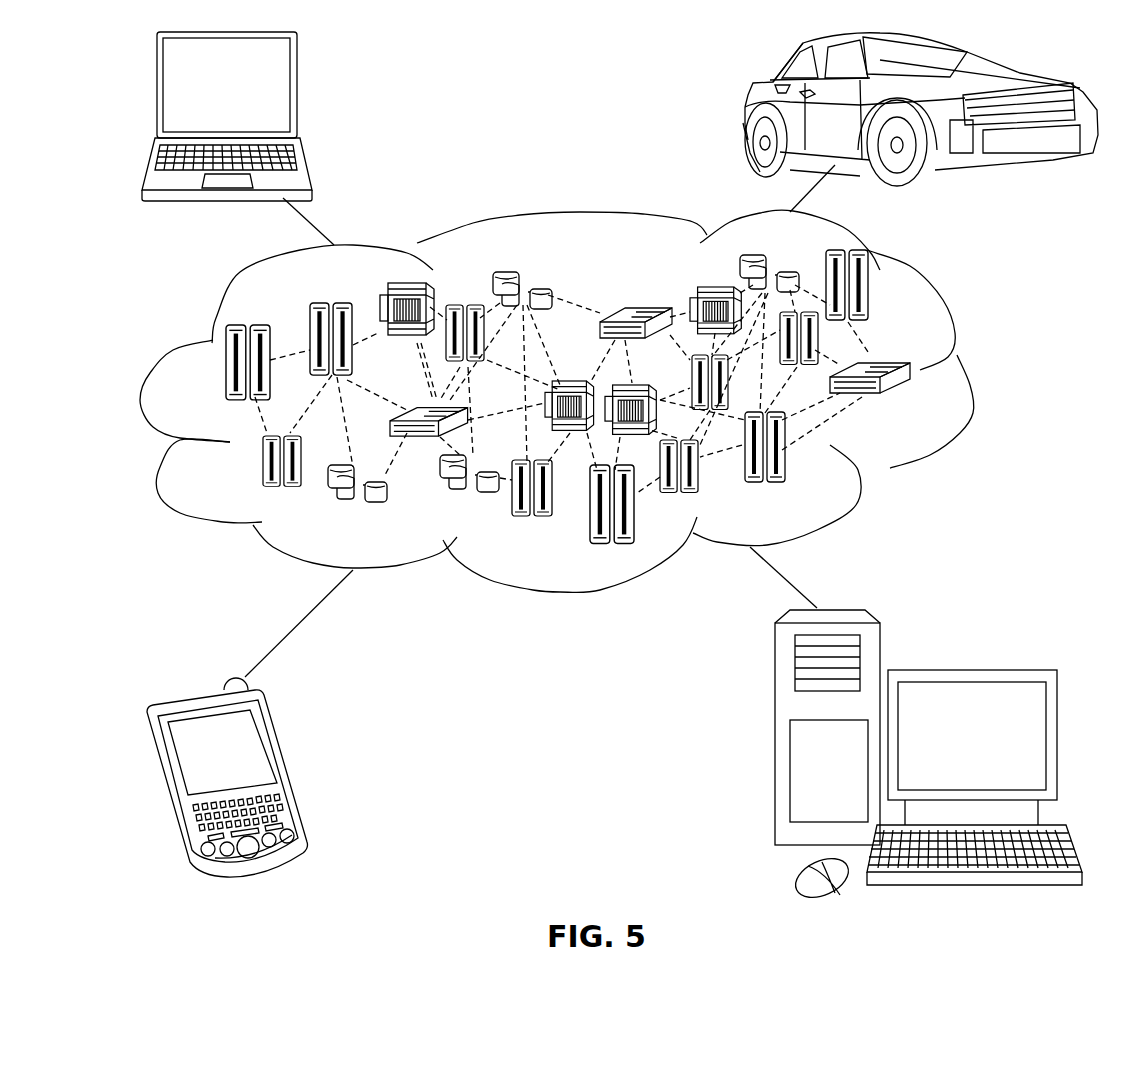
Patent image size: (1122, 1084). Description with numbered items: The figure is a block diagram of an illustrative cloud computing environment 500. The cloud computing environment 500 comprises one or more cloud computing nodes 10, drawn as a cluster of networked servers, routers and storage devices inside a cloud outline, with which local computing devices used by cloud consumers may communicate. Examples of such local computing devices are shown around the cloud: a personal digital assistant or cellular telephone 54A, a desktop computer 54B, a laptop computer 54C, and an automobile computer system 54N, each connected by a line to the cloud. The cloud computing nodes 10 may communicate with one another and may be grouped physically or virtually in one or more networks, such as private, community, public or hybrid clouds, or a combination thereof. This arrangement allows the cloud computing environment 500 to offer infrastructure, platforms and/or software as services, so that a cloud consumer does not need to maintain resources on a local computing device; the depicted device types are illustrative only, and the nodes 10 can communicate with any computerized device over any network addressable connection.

The personal digital assistant (PDA) or cellular telephone 54A is at (287, 767).
The desktop computer 54B is at (968, 670).
The laptop computer 54C is at (298, 93).
The automobile computer system 54N is at (743, 113).
The cloud computing environment 500 is at (968, 373).
The cloud computing nodes 10 is at (910, 406).